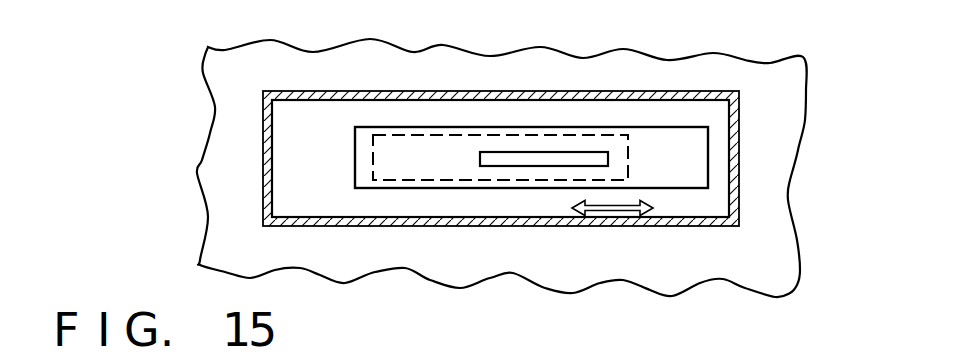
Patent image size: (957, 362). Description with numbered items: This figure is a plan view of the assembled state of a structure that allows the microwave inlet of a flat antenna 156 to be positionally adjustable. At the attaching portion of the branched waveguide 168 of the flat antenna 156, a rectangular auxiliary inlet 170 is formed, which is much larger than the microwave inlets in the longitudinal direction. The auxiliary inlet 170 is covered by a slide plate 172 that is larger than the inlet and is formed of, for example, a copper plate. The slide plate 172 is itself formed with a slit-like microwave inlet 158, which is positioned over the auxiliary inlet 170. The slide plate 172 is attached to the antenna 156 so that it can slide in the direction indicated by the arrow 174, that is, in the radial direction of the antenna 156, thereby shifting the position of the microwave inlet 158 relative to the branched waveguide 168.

The flat antenna 156 is at (778, 112).
The branched waveguide 168 is at (741, 167).
The slide plate 172 is at (693, 129).
The auxiliary inlet 170 is at (490, 135).
The microwave inlet 158 is at (595, 161).
The arrow 174 is at (627, 213).